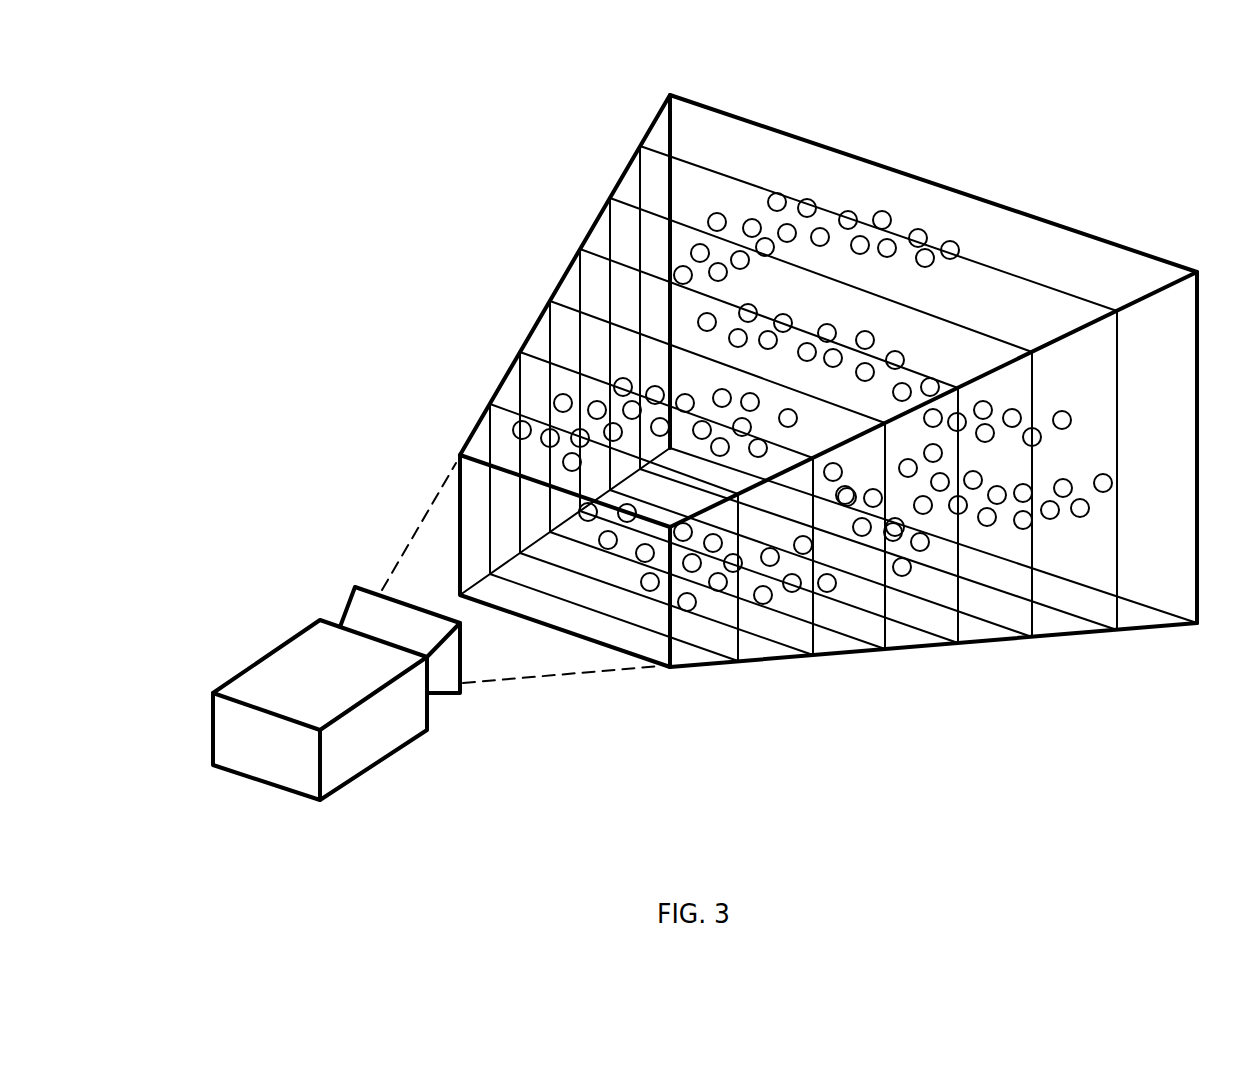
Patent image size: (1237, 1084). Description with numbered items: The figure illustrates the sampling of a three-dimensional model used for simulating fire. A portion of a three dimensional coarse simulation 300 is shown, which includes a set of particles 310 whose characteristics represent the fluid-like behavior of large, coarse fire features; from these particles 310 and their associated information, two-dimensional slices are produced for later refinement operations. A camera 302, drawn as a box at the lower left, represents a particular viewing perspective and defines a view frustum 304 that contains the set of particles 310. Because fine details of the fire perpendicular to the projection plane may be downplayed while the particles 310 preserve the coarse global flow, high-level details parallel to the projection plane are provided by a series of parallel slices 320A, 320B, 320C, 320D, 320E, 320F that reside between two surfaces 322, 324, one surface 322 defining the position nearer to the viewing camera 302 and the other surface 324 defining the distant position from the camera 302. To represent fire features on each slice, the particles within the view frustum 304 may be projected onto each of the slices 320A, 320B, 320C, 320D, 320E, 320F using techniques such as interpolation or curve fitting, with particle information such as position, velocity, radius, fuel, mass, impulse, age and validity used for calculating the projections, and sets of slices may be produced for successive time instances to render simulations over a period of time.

The three dimensional coarse simulation 300 is at (191, 146).
The camera 302 is at (242, 773).
The view frustum 304 is at (374, 554).
The set of particles 310 is at (1133, 702).
The parallel slice 320A is at (491, 410).
The parallel slice 320B is at (521, 360).
The parallel slice 320C is at (552, 310).
The parallel slice 320D is at (583, 262).
The parallel slice 320E is at (610, 210).
The parallel slice 320F is at (642, 148).
The surface 322 is at (457, 507).
The surface 324 is at (723, 112).